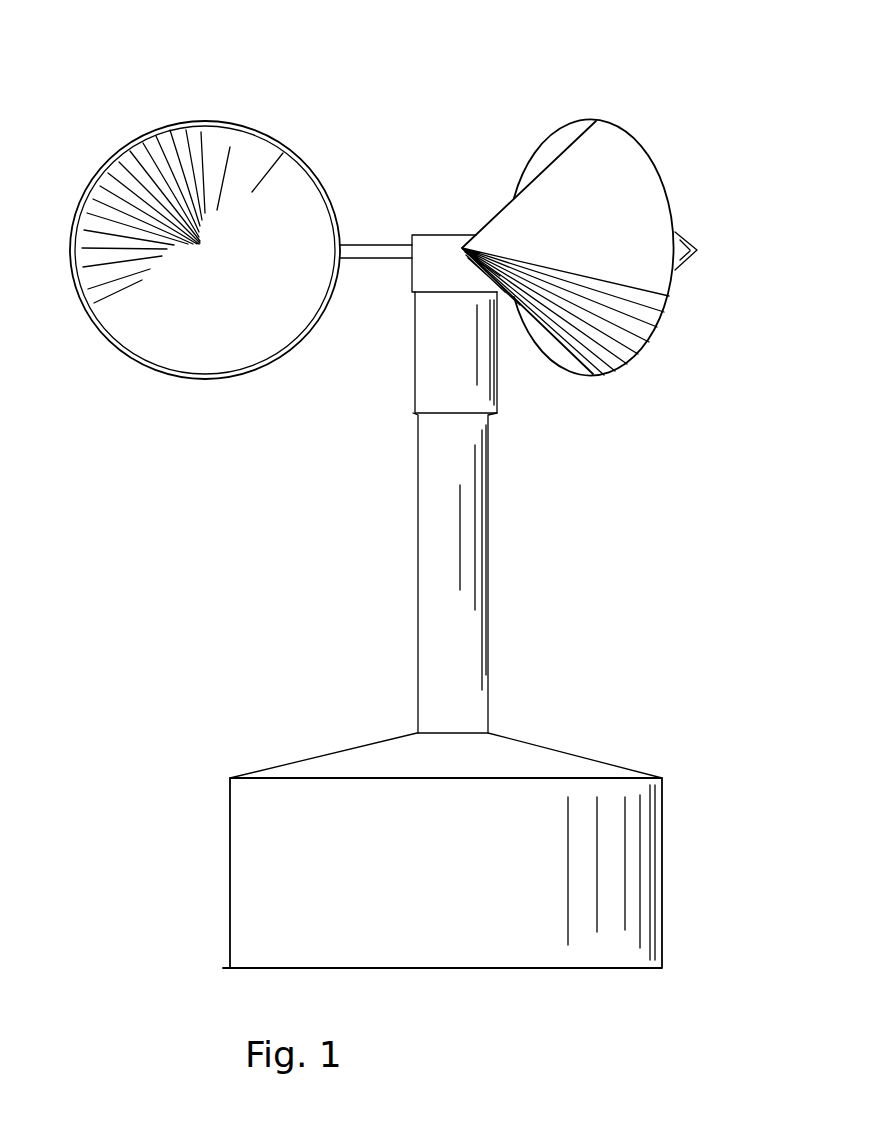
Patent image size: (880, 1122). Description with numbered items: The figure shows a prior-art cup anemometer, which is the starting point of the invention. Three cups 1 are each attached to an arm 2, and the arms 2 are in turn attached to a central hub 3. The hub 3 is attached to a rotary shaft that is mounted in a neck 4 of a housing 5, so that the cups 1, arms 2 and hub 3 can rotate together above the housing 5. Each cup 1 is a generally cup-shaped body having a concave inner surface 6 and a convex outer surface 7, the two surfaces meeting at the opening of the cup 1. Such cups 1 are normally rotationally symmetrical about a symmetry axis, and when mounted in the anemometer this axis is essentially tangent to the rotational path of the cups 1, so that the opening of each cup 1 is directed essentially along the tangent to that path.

The cup 1 is at (243, 125).
The arm 2 is at (363, 252).
The hub 3 is at (435, 265).
The neck 4 is at (453, 453).
The housing 5 is at (497, 833).
The concave inner surface 6 is at (210, 315).
The convex outer surface 7 is at (613, 237).